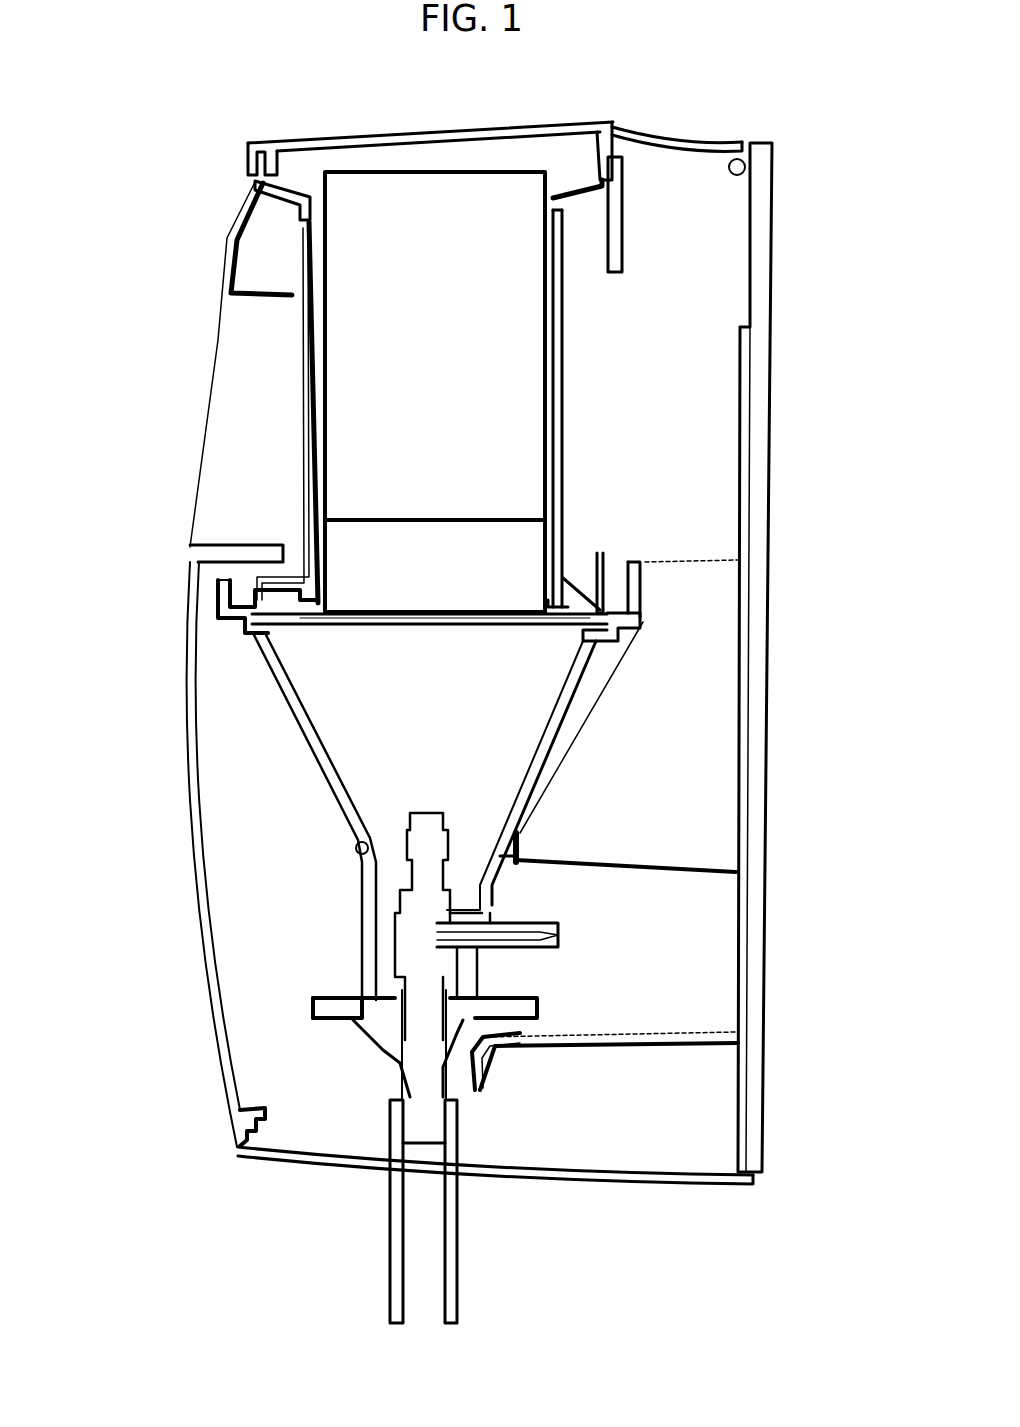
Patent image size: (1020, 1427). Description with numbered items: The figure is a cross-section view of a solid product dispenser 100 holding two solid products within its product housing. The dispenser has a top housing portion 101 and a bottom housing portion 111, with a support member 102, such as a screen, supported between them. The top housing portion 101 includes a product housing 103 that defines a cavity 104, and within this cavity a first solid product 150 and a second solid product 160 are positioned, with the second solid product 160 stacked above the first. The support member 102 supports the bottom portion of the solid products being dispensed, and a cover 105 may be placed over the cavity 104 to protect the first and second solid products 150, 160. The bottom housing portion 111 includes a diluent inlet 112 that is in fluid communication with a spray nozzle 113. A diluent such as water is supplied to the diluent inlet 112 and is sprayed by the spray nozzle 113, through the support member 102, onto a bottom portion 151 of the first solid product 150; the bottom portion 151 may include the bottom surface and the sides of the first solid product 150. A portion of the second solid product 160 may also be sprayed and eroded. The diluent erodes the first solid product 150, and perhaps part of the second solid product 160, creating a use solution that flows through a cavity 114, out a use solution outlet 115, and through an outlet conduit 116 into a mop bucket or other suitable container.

The solid product dispenser 100 is at (124, 864).
The top housing portion 101 is at (168, 265).
The support member 102 is at (333, 628).
The product housing 103 is at (562, 360).
The cavity 104 is at (318, 350).
The cover 105 is at (460, 130).
The bottom housing portion 111 is at (292, 834).
The diluent inlet 112 is at (550, 932).
The spray nozzle 113 is at (425, 823).
The cavity 114 is at (360, 856).
The use solution outlet 115 is at (384, 1068).
The outlet conduit 116 is at (453, 1291).
The first solid product 150 is at (480, 575).
The bottom portion 151 is at (418, 632).
The second solid product 160 is at (508, 440).